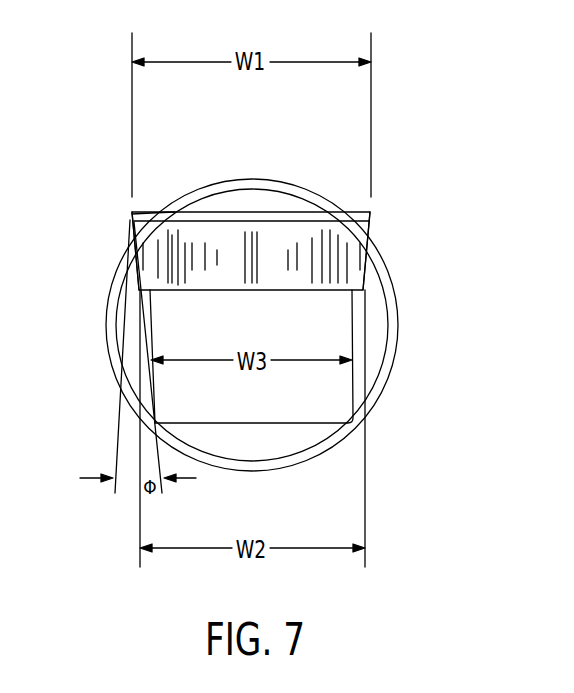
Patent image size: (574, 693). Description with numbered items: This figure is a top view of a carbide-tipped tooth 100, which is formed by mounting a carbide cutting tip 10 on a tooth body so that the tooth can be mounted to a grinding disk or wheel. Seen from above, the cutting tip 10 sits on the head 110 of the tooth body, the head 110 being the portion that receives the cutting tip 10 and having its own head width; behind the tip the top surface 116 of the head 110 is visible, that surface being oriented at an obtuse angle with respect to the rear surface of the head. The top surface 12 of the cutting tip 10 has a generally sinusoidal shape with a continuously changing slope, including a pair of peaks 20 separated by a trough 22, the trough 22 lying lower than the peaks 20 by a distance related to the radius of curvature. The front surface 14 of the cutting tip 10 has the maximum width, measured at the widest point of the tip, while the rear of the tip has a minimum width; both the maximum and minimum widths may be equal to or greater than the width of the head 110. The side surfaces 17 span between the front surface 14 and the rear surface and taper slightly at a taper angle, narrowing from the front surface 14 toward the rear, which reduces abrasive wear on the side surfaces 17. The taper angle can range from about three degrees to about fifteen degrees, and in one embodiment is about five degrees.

The carbide-tipped tooth 100 is at (460, 117).
The cutting tip 10 is at (380, 222).
The top surface 12 is at (225, 242).
The front surface 14 is at (282, 208).
The side surfaces 17 is at (135, 252).
The peaks 20 is at (187, 240).
The trough 22 is at (255, 233).
The head 110 is at (373, 323).
The top surface 116 is at (323, 395).